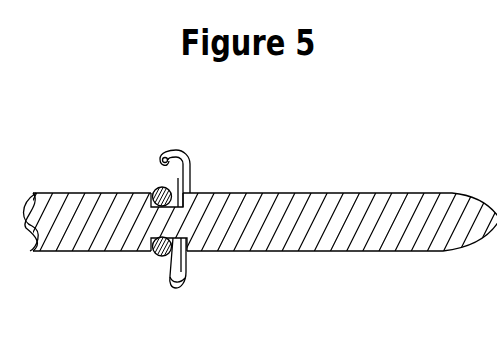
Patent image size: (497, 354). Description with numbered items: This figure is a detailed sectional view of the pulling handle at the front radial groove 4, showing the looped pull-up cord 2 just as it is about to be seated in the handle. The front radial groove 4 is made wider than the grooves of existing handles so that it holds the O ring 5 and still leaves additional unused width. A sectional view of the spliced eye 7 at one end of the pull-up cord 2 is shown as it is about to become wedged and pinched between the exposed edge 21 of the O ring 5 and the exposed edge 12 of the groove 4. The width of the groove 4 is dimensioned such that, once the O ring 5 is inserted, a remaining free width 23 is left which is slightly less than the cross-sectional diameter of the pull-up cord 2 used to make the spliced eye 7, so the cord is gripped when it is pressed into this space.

The looped pull-up cord 2 is at (163, 160).
The front radial groove 4 is at (172, 236).
The O ring 5 is at (157, 188).
The spliced eye 7 is at (208, 164).
The exposed edge 12 is at (185, 204).
The exposed edge 21 is at (168, 258).
The remaining free width 23 is at (191, 186).